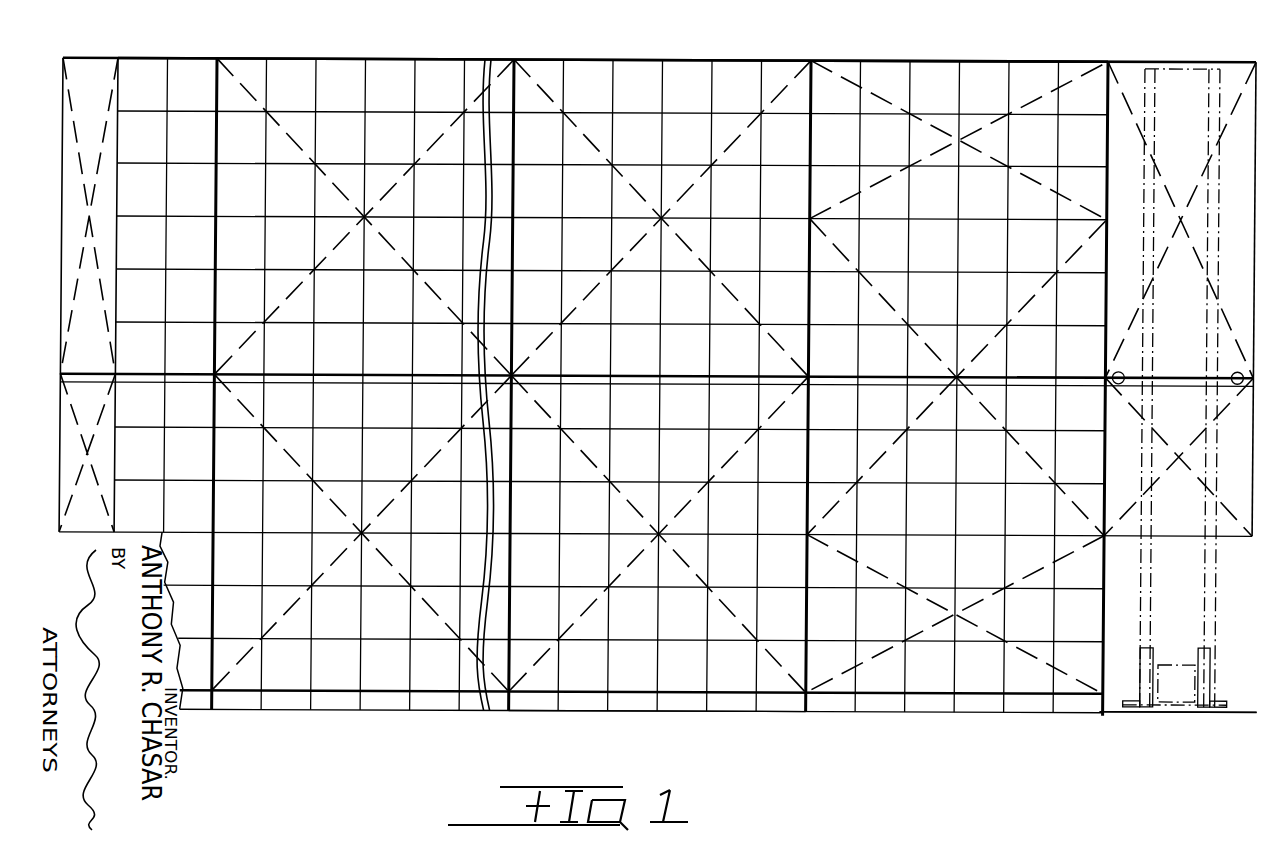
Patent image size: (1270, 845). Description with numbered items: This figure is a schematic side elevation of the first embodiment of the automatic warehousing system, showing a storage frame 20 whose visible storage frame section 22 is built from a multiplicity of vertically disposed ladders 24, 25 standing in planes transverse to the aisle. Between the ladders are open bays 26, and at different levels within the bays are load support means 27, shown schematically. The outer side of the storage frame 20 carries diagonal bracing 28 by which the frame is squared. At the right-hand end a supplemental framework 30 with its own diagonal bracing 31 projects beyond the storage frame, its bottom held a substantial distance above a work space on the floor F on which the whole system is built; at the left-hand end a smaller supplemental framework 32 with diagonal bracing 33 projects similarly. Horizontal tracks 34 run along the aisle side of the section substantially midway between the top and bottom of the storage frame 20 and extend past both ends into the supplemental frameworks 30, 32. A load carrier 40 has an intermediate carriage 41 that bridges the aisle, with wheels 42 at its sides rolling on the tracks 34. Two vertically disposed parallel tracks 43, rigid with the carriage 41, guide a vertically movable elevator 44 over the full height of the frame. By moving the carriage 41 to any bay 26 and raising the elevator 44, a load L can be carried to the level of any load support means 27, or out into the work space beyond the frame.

The storage frame 20 is at (838, 48).
The storage frame section 22 is at (672, 60).
The ladder 24 is at (312, 682).
The ladder 25 is at (214, 672).
The open bay 26 is at (722, 692).
The load support means 27 is at (522, 432).
The diagonal bracing 28 is at (718, 460).
The supplemental framework 30 is at (1193, 60).
The diagonal bracing 31 is at (1170, 250).
The supplemental framework 32 is at (95, 57).
The diagonal bracing 33 is at (79, 124).
The tracks 34 is at (884, 384).
The load carrier 40 is at (1216, 596).
The intermediate carriage 41 is at (1170, 376).
The wheels 42 is at (1118, 370).
The vertical tracks 43 is at (1150, 598).
The elevator 44 is at (1155, 650).
The load L is at (1180, 660).
The floor F is at (1240, 714).